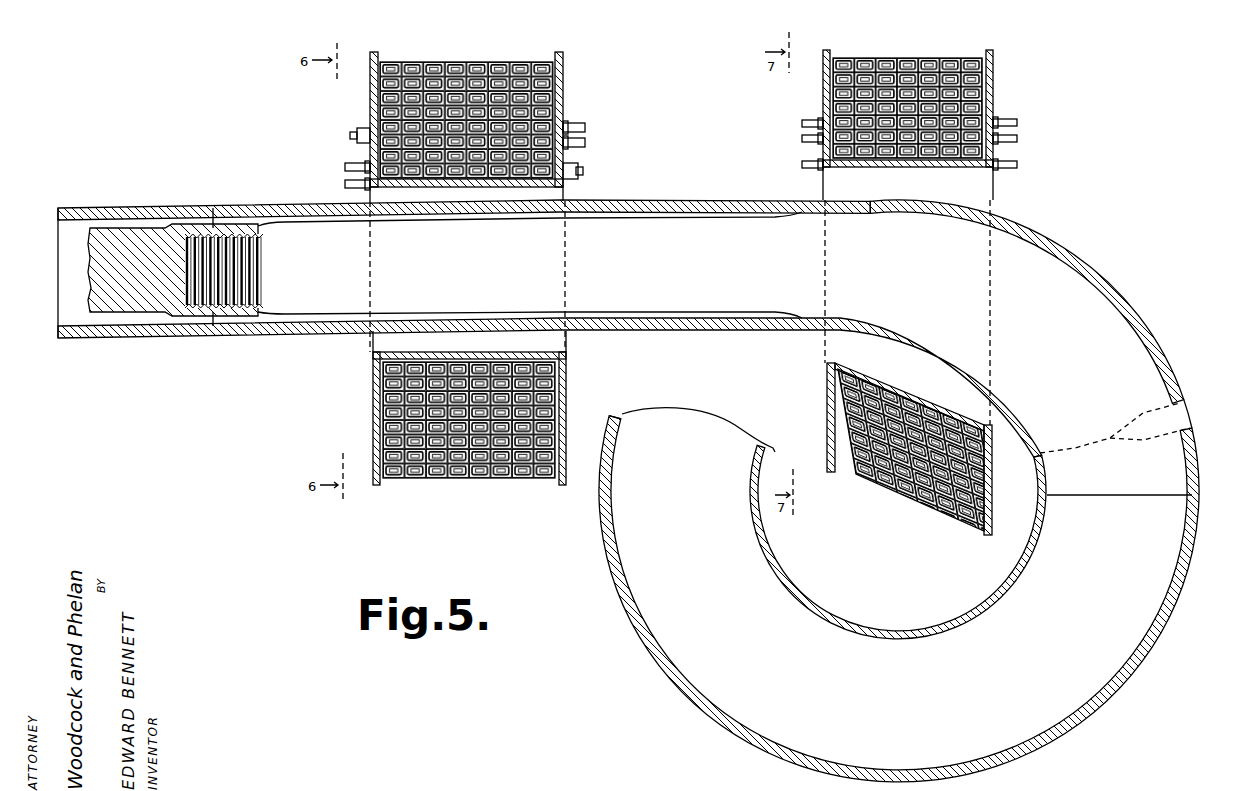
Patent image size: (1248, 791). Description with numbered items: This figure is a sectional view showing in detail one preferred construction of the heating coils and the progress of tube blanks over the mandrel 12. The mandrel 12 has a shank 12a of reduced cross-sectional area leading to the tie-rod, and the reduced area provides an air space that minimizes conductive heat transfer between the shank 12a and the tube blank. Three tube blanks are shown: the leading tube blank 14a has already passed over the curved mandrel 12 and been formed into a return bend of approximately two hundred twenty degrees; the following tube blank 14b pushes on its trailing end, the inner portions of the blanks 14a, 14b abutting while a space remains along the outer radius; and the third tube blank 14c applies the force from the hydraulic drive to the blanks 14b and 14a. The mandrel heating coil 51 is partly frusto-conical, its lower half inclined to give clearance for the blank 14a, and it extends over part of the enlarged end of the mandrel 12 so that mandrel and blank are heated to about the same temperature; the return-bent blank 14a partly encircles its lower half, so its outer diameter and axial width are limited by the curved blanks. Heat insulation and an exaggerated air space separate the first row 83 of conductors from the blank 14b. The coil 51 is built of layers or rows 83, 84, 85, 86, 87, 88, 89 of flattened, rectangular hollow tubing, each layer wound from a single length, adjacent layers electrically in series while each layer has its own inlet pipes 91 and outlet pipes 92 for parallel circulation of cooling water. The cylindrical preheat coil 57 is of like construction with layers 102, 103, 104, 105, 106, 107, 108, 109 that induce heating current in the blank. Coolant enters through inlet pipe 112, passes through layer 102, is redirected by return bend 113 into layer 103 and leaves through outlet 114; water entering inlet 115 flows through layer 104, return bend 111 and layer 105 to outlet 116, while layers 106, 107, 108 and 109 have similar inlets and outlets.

The mandrel 12 is at (1167, 415).
The shank of the mandrel 12a is at (705, 246).
The tube blank 14a is at (660, 664).
The following tube blank 14b is at (1050, 244).
The third tube blank 14c is at (122, 330).
The mandrel heating coil 51 is at (798, 423).
The preheat coil 57 is at (352, 428).
The first row of conductors 83 is at (968, 158).
The conductor layer 84 is at (930, 158).
The conductor layer 85 is at (878, 158).
The conductor layer 86 is at (823, 103).
The conductor layer 87 is at (861, 72).
The conductor layer 88 is at (912, 63).
The conductor layer 89 is at (971, 60).
The inlet pipes 91 is at (1017, 164).
The outlet pipes 92 is at (808, 164).
The layer of the preheat coil 102 is at (444, 176).
The layer of the preheat coil 103 is at (500, 173).
The layer of the preheat coil 104 is at (537, 163).
The layer of the preheat coil 105 is at (555, 112).
The layer of the preheat coil 106 is at (537, 66).
The layer of the preheat coil 107 is at (472, 64).
The layer of the preheat coil 108 is at (370, 97).
The layer of the preheat coil 109 is at (432, 62).
The return bend 111 is at (350, 136).
The inlet pipe 112 is at (358, 195).
The return bend 113 is at (583, 171).
The outlet 114 is at (357, 167).
The inlet 115 is at (579, 155).
The outlet 116 is at (581, 121).